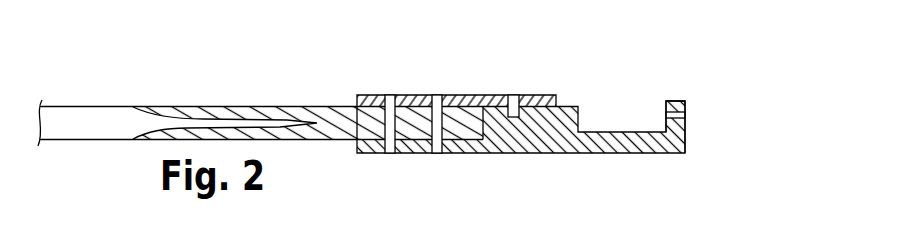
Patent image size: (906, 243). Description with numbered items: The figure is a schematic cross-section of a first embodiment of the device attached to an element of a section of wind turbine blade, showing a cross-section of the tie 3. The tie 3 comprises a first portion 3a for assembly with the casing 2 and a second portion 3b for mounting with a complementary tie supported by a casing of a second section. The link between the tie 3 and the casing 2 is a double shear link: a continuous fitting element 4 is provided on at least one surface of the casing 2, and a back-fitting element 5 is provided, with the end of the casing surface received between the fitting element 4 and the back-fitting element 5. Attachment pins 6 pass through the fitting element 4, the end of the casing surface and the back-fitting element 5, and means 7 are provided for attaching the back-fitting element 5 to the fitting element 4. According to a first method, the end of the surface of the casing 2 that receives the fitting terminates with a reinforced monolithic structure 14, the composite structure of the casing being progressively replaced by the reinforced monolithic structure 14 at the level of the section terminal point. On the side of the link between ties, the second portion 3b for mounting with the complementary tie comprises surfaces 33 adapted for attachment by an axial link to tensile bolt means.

The casing 2 is at (93, 124).
The reinforced monolithic structure 14 is at (331, 124).
The tie 3 is at (513, 142).
The first portion 3a is at (352, 77).
The second portion 3b is at (567, 78).
The continuous fitting element 4 is at (413, 147).
The back-fitting element 5 is at (412, 100).
The attachment pins 6 is at (437, 145).
The means for attaching 7 is at (513, 100).
The surfaces 33 is at (686, 137).